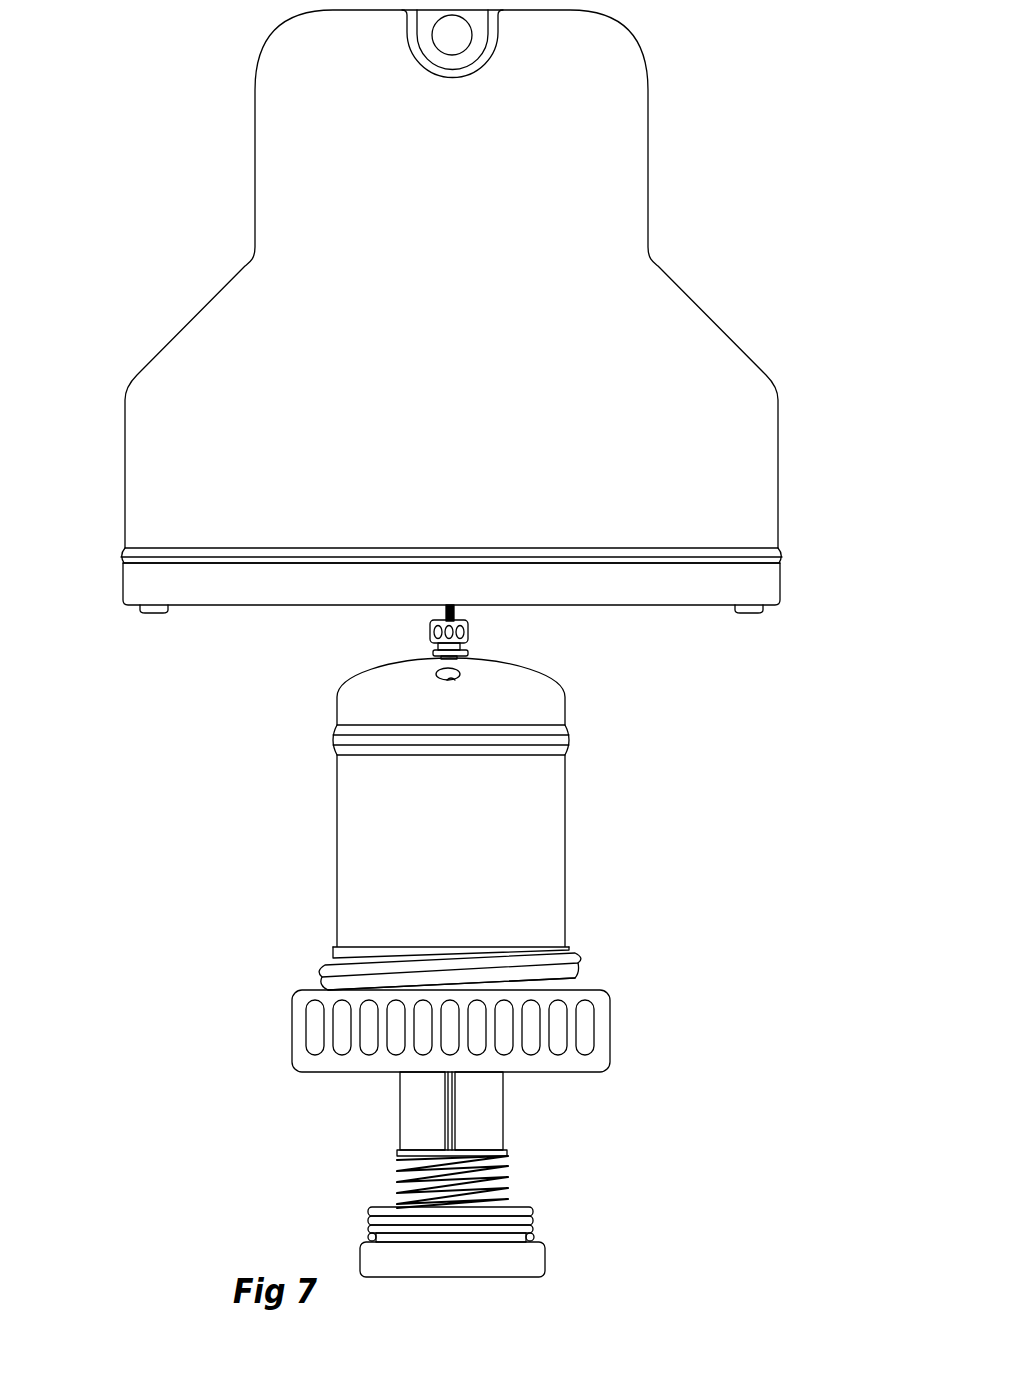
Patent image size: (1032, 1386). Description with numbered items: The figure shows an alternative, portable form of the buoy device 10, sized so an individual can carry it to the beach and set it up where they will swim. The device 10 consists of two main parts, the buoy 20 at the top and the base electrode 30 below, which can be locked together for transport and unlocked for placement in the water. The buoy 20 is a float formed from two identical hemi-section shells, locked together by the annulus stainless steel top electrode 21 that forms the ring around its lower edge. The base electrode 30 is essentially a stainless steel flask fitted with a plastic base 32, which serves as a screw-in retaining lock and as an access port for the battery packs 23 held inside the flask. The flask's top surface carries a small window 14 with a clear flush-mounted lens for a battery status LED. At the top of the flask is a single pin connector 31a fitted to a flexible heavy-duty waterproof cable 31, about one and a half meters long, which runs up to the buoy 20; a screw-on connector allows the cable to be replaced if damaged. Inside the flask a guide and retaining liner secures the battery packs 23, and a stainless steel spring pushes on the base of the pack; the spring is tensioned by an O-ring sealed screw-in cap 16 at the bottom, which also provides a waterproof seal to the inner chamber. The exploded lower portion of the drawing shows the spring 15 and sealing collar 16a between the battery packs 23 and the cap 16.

The device 10 is at (714, 154).
The buoy 20 is at (303, 210).
The annulus stainless steel top electrode 21 is at (167, 590).
The flexible heavy-duty waterproof cable 31 is at (445, 612).
The single pin connector 31a is at (468, 630).
The small window 14 is at (460, 673).
The base electrode 30 is at (460, 863).
The plastic base 32 is at (580, 960).
The battery packs 23 is at (472, 1118).
The spring 15 is at (398, 1170).
The collar 16a is at (538, 1235).
The screw in cap 16 is at (547, 1260).